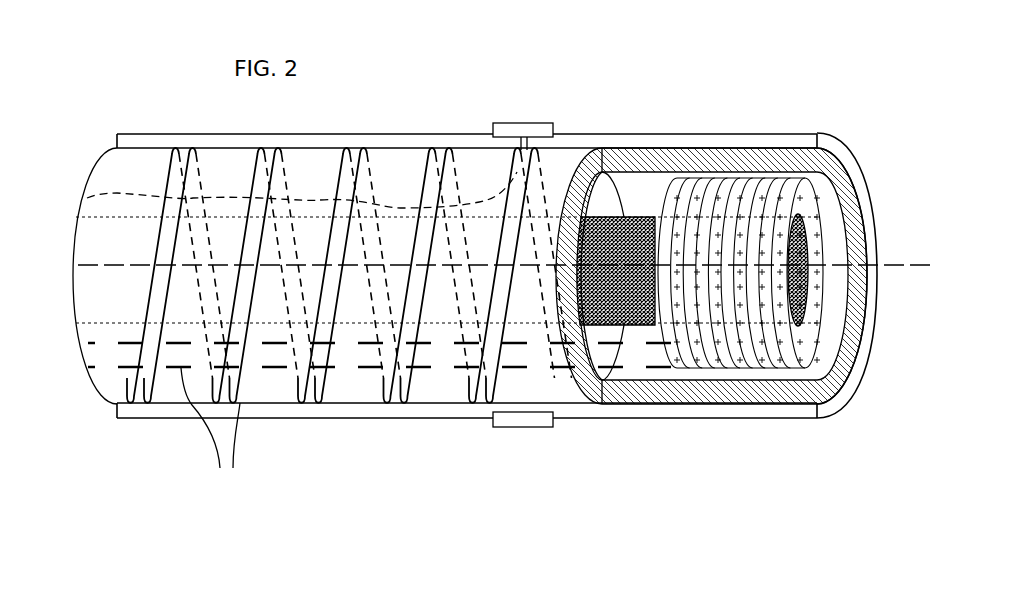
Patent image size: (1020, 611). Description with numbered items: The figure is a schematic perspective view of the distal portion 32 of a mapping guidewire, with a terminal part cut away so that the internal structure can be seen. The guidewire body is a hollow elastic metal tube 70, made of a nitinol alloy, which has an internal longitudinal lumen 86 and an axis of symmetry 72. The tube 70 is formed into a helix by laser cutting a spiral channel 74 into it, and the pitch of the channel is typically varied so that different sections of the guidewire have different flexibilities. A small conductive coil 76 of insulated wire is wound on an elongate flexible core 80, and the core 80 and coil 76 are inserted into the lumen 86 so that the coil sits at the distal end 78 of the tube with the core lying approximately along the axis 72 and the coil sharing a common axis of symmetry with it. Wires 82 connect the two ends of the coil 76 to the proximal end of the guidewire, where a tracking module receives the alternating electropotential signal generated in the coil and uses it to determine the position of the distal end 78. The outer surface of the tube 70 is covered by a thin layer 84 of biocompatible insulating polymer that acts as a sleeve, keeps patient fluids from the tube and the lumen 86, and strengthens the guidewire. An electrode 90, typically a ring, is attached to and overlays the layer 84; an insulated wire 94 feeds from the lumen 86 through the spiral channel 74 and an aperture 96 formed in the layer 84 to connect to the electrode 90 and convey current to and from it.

The distal portion 32 is at (597, 95).
The hollow elastic metal tube 70 is at (753, 401).
The axis of symmetry 72 is at (932, 262).
The spiral channel 74 is at (396, 404).
The conductive coil 76 is at (713, 178).
The distal end 78 is at (845, 394).
The elongate flexible core 80 is at (628, 328).
The wires 82 is at (210, 432).
The thin layer of biocompatible insulating polymer 84 is at (163, 134).
The internal longitudinal lumen 86 is at (607, 200).
The electrode 90 is at (525, 122).
The insulated wire 94 is at (117, 193).
The aperture 96 is at (518, 143).